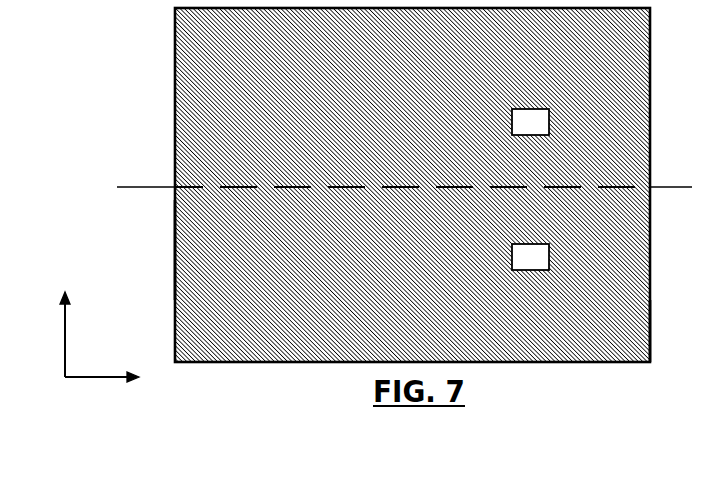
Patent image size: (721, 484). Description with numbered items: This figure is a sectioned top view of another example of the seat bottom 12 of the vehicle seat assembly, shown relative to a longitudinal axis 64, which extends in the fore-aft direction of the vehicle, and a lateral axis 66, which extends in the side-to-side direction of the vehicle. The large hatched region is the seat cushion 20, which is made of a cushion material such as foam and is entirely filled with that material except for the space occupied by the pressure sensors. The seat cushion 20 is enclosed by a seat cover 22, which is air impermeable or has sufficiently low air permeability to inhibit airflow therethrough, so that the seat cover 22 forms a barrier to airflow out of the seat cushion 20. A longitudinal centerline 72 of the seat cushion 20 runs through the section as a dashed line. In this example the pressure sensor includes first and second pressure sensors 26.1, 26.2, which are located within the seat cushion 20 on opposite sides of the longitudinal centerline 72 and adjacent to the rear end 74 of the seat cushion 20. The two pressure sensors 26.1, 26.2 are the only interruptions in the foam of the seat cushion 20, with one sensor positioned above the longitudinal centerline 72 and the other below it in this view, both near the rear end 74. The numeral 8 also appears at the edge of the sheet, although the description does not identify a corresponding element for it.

The seat bottom 12 is at (0, 31).
The strut 8 is at (4, 146).
The longitudinal centerline 72 is at (130, 187).
The seat cover 22 is at (175, 250).
The seat cushion 20 is at (203, 307).
The first pressure sensor 26.1 is at (537, 122).
The second pressure sensor 26.2 is at (537, 254).
The rear end 74 is at (650, 343).
The lateral axis 66 is at (65, 330).
The longitudinal axis 64 is at (90, 377).